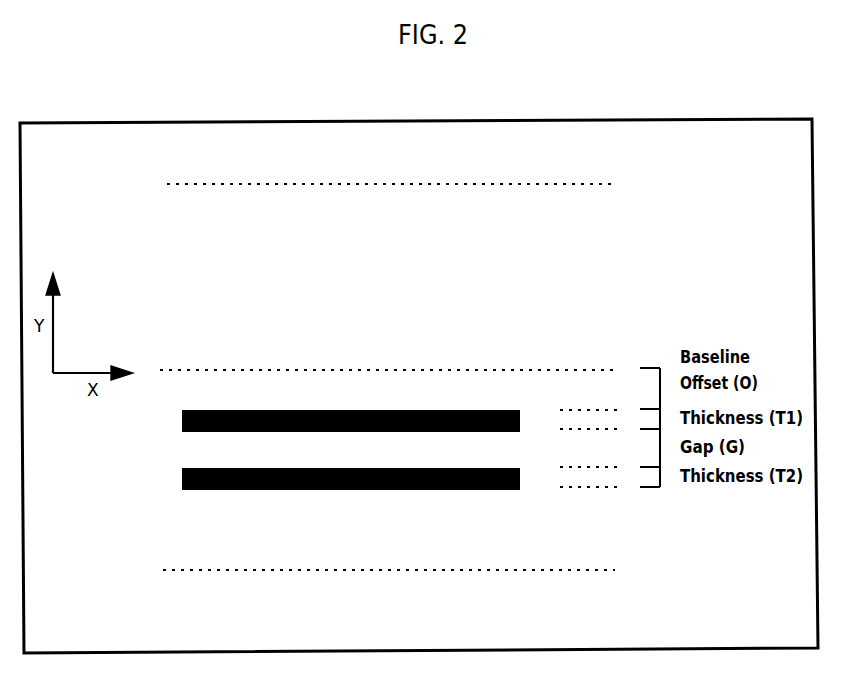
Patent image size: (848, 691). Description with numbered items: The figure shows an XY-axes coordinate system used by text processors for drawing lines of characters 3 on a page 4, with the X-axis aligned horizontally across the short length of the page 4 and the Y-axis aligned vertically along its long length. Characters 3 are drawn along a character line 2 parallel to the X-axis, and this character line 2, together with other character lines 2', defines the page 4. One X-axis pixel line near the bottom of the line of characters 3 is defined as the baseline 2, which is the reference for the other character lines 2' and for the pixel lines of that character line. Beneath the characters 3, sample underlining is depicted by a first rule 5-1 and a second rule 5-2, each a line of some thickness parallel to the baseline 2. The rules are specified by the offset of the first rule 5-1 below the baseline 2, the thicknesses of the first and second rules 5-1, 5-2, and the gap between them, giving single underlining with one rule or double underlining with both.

The page 4 is at (766, 119).
The character line (baseline) 2 is at (386, 351).
The other character lines 2' is at (389, 364).
The characters 3 is at (197, 326).
The first rule 5-1 is at (182, 421).
The second rule 5-2 is at (182, 480).